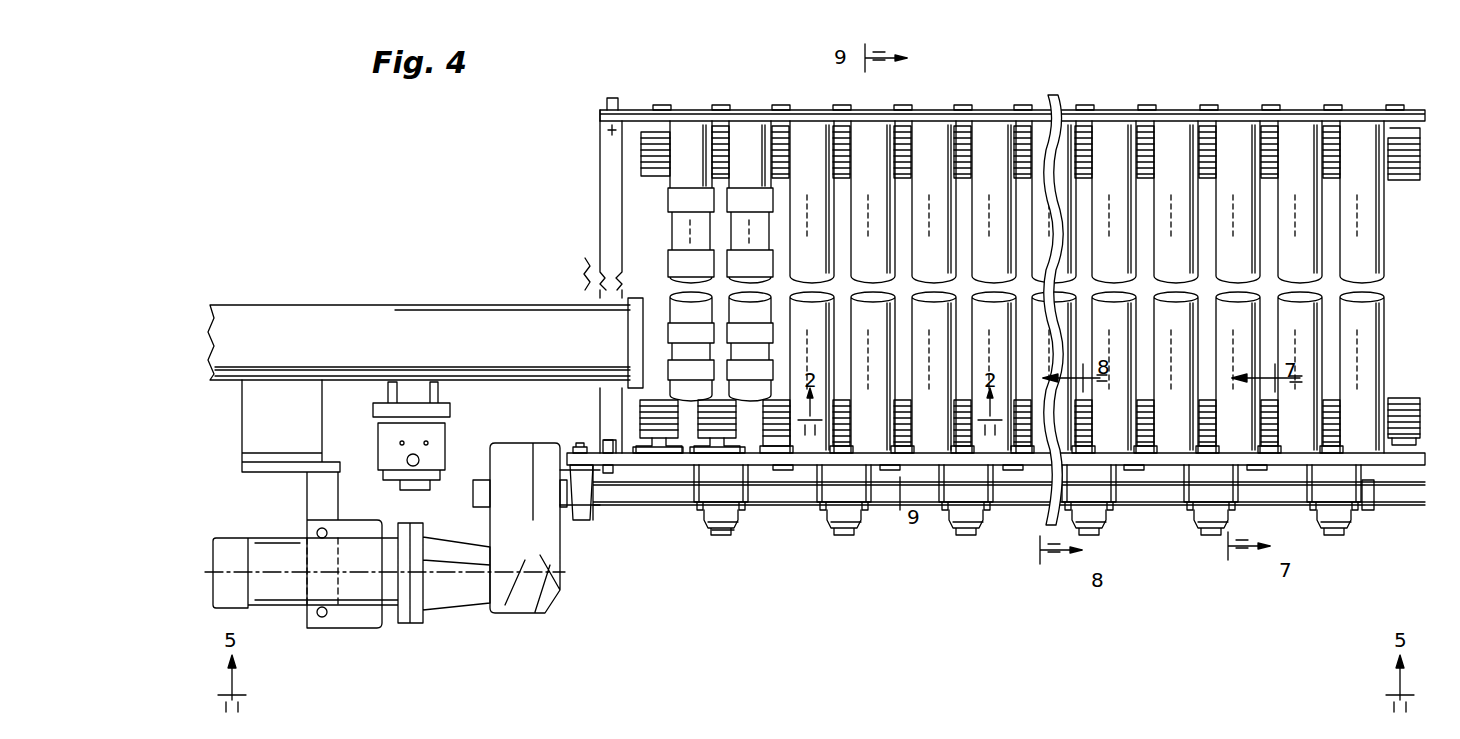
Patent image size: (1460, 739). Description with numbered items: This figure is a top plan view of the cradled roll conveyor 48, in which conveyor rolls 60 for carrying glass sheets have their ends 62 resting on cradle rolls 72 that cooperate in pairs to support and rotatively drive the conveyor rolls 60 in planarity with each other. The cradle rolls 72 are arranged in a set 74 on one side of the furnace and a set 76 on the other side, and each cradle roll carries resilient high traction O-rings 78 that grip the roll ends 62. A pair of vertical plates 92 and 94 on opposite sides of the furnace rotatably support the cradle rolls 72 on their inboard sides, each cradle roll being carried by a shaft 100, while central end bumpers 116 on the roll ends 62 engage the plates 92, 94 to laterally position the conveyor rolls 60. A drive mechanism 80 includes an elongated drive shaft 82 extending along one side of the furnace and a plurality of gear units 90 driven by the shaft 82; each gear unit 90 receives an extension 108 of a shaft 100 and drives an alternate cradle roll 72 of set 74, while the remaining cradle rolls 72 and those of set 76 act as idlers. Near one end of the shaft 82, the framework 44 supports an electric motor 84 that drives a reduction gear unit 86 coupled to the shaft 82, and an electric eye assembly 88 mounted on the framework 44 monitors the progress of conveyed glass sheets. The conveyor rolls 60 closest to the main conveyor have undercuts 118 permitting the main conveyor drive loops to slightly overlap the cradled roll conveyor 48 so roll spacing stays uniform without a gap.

The framework 44 is at (432, 303).
The cradled roll conveyor 48 is at (1034, 78).
The conveyor rolls 60 is at (930, 300).
The ends of the conveyor rolls 62 is at (924, 122).
The cradle rolls 72 is at (656, 182).
The cradle roll set 74 is at (1404, 396).
The cradle roll set 76 is at (1404, 186).
The O-rings 78 is at (641, 170).
The drive mechanism 80 is at (570, 600).
The drive shaft 82 is at (680, 462).
The electric motor 84 is at (360, 610).
The reduction gear unit 86 is at (548, 630).
The electric eye assembly 88 is at (455, 438).
The gear units 90 is at (724, 514).
The vertical plate 92 is at (1048, 482).
The vertical plate 94 is at (1044, 112).
The shaft 100 is at (660, 125).
The extension 108 is at (716, 528).
The central end bumpers 116 is at (800, 122).
The undercuts 118 is at (748, 234).